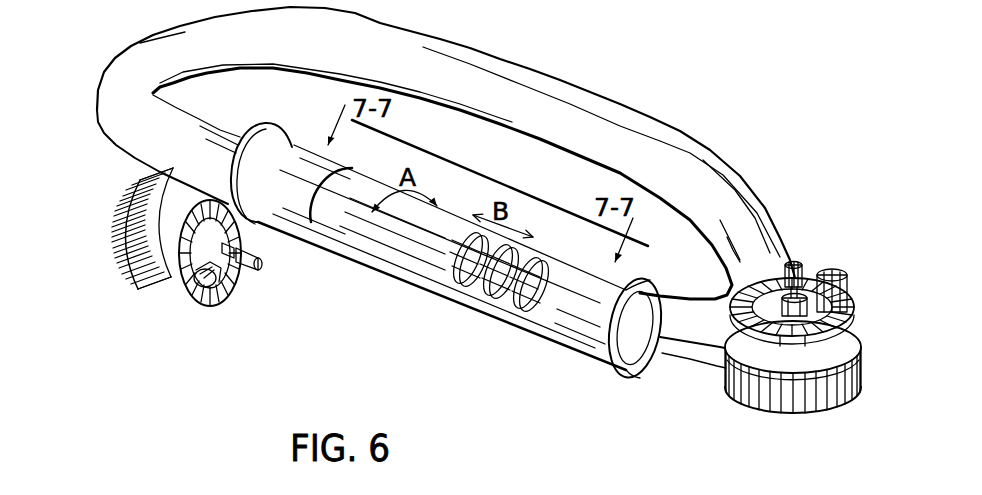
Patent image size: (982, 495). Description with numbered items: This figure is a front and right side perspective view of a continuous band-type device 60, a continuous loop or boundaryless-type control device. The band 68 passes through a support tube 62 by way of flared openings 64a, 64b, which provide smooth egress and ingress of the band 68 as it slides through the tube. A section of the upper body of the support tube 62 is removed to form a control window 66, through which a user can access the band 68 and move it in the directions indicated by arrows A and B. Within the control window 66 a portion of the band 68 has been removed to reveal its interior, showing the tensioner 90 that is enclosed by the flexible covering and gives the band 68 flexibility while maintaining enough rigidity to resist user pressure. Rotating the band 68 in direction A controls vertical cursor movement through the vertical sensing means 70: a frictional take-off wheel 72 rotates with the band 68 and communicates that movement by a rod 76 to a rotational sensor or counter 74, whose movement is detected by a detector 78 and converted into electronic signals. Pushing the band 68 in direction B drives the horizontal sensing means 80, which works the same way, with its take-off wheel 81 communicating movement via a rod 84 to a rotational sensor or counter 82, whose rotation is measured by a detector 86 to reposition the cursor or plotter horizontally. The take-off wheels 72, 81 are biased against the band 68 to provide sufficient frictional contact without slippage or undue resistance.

The continuous band-type device 60 is at (132, 28).
The support tube 62 is at (551, 338).
The opening 64a is at (254, 130).
The opening 64b is at (672, 294).
The control window 66 is at (382, 186).
The band 68 is at (388, 59).
The vertical sensing means 70 is at (90, 263).
The frictional take-off wheel 72 is at (130, 202).
The rotational sensor or counter 74 is at (209, 305).
The rod 76 is at (266, 262).
The detector 78 is at (226, 290).
The horizontal sensing means 80 is at (809, 422).
The take-off wheel 81 is at (852, 374).
The rotational sensor or counter 82 is at (852, 304).
The rod 84 is at (798, 264).
The detector 86 is at (833, 270).
The tensioner 90 is at (478, 288).